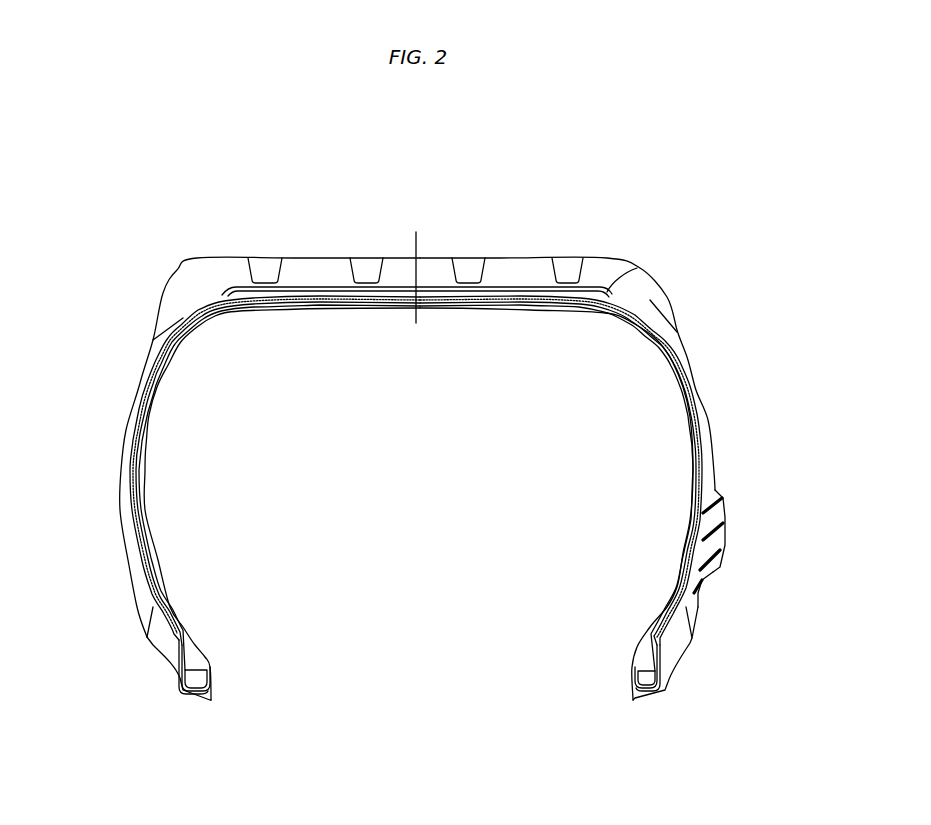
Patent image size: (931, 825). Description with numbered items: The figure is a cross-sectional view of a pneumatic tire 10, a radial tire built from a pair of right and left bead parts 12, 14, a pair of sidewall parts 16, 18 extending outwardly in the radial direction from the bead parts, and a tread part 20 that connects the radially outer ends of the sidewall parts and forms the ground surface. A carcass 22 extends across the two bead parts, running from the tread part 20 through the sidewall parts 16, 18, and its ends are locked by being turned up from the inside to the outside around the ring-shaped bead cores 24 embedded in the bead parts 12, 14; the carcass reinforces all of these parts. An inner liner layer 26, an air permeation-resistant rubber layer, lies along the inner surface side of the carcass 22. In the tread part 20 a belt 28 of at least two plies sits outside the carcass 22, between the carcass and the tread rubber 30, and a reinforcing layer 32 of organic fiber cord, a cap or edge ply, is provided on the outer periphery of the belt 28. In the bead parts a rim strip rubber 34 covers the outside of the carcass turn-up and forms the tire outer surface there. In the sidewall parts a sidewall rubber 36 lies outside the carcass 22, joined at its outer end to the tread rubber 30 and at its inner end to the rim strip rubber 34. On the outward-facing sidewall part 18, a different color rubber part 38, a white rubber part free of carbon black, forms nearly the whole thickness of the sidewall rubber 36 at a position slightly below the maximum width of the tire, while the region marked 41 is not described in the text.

The pneumatic tire 10 is at (400, 187).
The bead part 12 is at (178, 688).
The bead part 14 is at (665, 690).
The sidewall part 16 is at (120, 510).
The sidewall part 18 is at (718, 455).
The tread part 20 is at (514, 258).
The carcass 22 is at (687, 357).
The bead core 24 is at (197, 678).
The inner liner layer 26 is at (150, 383).
The belt 28 is at (313, 288).
The tread rubber 30 is at (541, 258).
The reinforcing layer 32 is at (637, 268).
The rim strip rubber 34 is at (680, 645).
The sidewall rubber 36 is at (133, 390).
The different color rubber part 38 is at (717, 530).
The protector rib lower end 41 is at (717, 570).